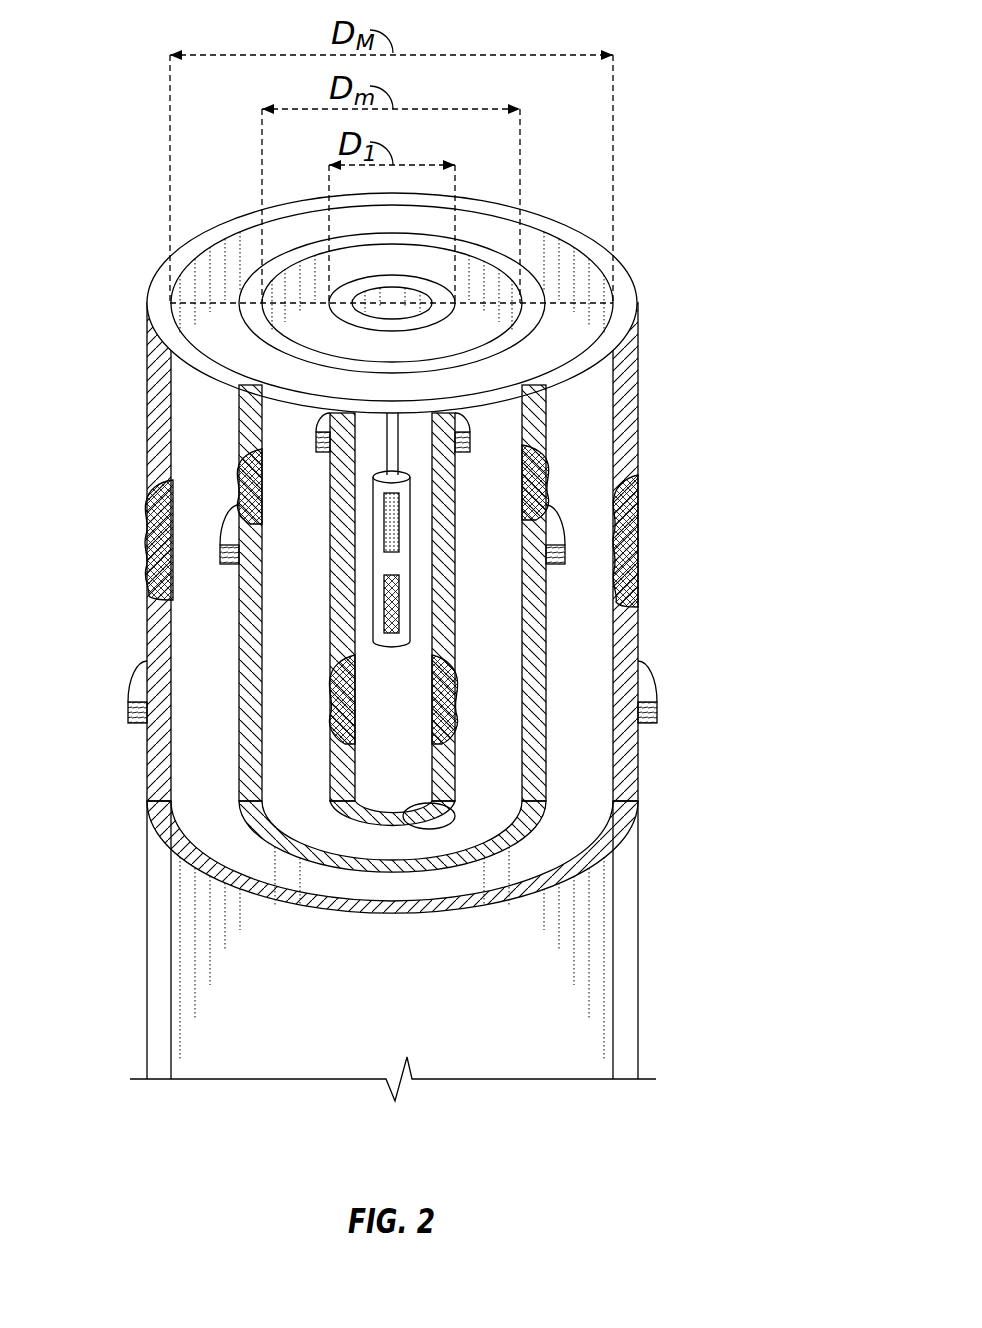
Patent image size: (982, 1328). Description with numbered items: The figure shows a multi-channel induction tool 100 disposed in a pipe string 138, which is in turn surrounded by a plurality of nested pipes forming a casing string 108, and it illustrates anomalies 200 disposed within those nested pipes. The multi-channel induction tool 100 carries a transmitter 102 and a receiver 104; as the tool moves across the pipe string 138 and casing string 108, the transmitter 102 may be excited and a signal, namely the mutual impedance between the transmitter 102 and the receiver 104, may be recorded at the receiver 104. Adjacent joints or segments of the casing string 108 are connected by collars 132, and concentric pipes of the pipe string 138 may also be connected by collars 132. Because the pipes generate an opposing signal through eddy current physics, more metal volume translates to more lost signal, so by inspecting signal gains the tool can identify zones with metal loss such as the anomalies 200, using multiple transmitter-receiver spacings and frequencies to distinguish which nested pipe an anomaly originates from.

The multi-channel induction tool 100 is at (402, 561).
The transmitter 102 is at (396, 514).
The receiver 104 is at (397, 608).
The casing string 108 is at (738, 617).
The collar 132 is at (466, 446).
The pipe string 138 is at (440, 801).
The anomalies 200 is at (242, 468).